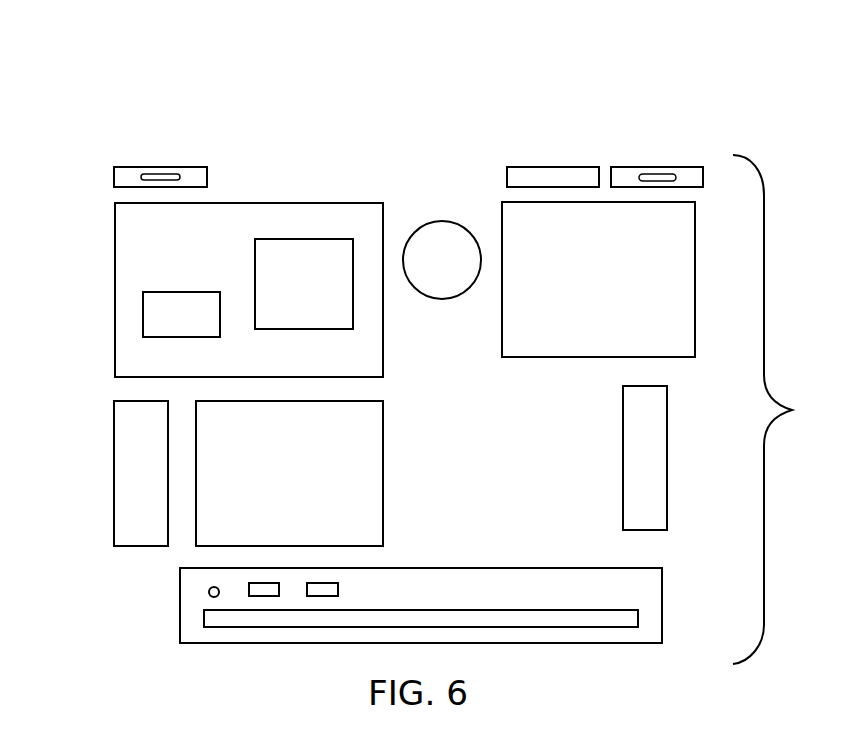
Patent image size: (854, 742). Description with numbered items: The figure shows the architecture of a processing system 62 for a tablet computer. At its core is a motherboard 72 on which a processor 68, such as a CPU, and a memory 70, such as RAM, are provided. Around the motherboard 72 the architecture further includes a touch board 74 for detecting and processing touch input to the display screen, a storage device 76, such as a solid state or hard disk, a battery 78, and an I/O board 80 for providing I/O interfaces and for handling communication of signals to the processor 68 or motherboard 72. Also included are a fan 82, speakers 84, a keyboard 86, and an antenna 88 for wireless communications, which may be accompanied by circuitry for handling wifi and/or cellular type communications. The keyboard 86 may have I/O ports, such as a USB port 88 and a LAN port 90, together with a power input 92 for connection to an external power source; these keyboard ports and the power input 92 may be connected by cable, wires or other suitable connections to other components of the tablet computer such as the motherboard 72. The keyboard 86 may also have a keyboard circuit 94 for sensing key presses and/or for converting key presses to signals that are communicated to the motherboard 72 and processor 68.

The processing system 62 is at (90, 133).
The processor 68 is at (321, 296).
The memory 70 is at (204, 292).
The motherboard 72 is at (159, 238).
The touch board 74 is at (668, 455).
The storage device 76 is at (305, 478).
The battery 78 is at (613, 284).
The I/O board 80 is at (114, 473).
The fan 82 is at (158, 167).
The speakers 84 is at (654, 167).
The keyboard 86 is at (663, 604).
The antenna 88 is at (552, 167).
The LAN port 90 is at (338, 590).
The power input 92 is at (208, 593).
The keyboard circuit 94 is at (560, 610).